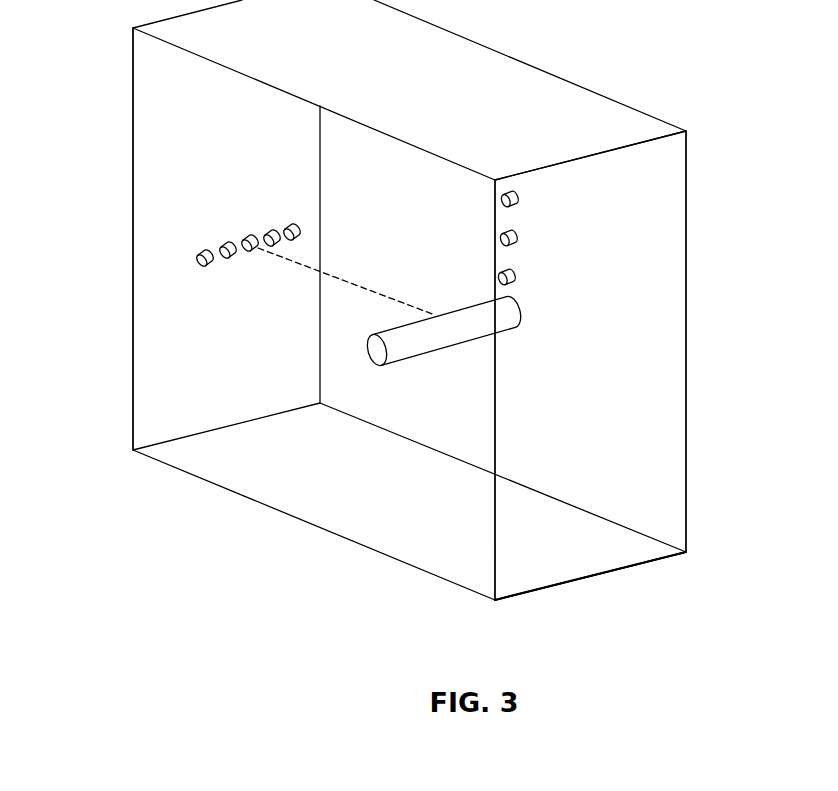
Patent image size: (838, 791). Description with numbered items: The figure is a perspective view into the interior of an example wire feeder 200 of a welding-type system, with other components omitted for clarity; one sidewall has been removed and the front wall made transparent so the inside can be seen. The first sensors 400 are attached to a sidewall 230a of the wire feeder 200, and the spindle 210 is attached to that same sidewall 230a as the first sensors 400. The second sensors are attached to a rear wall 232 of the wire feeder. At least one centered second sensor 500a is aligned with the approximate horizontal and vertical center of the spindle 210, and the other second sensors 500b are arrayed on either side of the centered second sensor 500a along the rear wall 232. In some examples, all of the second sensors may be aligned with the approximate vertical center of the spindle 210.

The wire feeder 200 is at (736, 187).
The rear wall 232 is at (150, 117).
The sidewall 230a is at (671, 281).
The spindle 210 is at (525, 311).
The first sensors 400 is at (528, 197).
The centered second sensor 500a is at (247, 256).
The other second sensors 500b is at (295, 219).